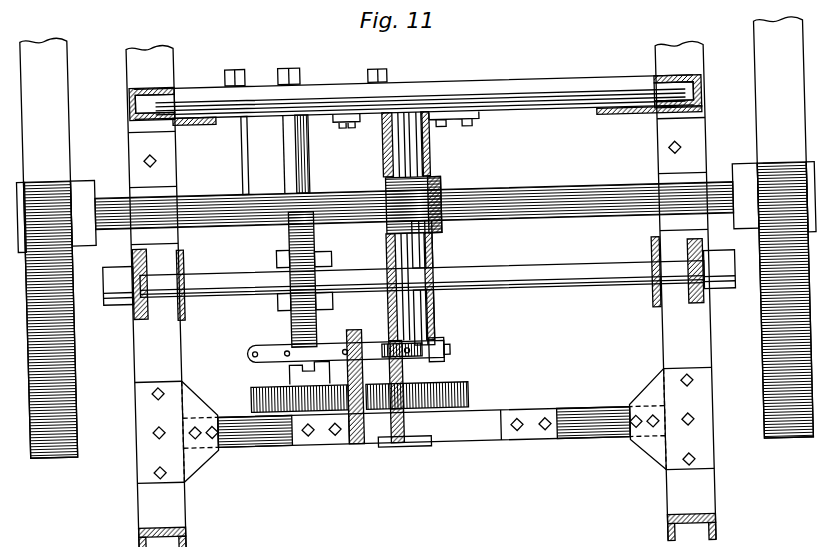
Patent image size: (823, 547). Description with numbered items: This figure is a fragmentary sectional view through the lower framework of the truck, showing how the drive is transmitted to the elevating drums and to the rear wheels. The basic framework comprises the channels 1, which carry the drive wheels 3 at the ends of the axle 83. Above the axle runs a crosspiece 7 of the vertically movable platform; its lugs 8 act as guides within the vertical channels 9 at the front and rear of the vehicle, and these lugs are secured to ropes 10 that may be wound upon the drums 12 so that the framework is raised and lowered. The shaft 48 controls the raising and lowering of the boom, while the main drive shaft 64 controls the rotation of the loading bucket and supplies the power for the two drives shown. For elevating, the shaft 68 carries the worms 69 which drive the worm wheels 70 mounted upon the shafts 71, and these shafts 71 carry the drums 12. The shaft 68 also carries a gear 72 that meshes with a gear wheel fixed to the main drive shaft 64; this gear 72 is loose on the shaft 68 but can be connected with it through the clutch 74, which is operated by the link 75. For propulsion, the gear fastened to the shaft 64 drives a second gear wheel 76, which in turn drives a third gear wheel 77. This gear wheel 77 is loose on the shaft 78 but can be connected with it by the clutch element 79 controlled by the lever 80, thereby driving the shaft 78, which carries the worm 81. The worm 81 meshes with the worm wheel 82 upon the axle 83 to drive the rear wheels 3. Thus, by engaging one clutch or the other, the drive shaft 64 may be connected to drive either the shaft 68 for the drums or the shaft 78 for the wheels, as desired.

The channel 1 is at (141, 336).
The drive wheel 3 is at (75, 432).
The crosspiece 7 is at (558, 86).
The lug 8 is at (178, 84).
The vertical channel 9 is at (131, 98).
The rope 10 is at (140, 260).
The drum 12 is at (135, 312).
The shaft 48 is at (237, 66).
The main drive shaft 64 is at (388, 159).
The shaft 68 is at (311, 158).
The worm 69 is at (329, 256).
The worm wheel 70 is at (292, 232).
The shaft 71 is at (208, 274).
The gear 72 is at (249, 392).
The clutch 74 is at (289, 365).
The link 75 is at (244, 131).
The second gear wheel 76 is at (375, 404).
The third gear wheel 77 is at (464, 398).
The shaft 78 is at (430, 297).
The clutch element 79 is at (439, 358).
The lever 80 is at (355, 347).
The worm 81 is at (437, 187).
The worm wheel 82 is at (434, 259).
The axle 83 is at (557, 194).